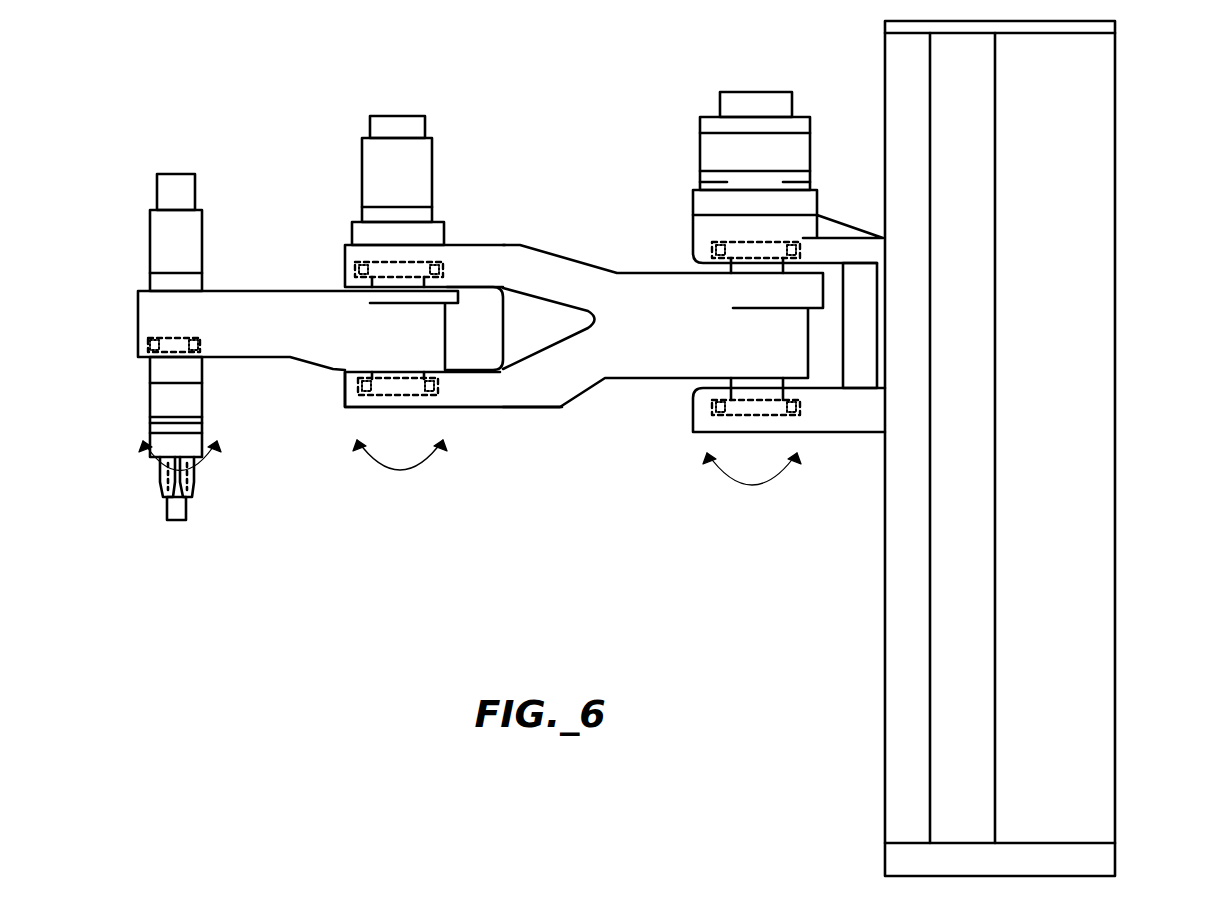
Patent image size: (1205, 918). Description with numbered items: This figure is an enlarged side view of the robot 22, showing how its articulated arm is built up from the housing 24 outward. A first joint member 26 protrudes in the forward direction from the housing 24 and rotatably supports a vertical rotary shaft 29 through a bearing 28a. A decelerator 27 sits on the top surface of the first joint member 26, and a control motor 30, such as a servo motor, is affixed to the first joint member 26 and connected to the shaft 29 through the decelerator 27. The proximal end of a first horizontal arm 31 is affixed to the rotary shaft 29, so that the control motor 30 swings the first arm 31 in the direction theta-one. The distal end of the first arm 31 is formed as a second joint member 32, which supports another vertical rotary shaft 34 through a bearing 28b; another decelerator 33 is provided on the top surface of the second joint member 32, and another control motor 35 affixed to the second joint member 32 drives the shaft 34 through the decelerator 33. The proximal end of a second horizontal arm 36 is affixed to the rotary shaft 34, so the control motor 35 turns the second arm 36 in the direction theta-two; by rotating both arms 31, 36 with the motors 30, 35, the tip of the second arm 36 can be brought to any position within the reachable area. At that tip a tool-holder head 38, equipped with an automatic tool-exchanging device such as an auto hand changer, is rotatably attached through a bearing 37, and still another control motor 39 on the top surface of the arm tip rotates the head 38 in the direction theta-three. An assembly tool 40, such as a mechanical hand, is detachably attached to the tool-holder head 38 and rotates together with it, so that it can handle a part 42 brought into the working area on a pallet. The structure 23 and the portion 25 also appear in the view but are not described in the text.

The robot 22 is at (531, 151).
The wall / mounting surface 23 is at (1105, 366).
The housing 24 is at (883, 407).
The forearm fork member 25 is at (518, 415).
The first joint member 26 is at (711, 431).
The decelerator 27 is at (706, 205).
The bearing 28a is at (713, 251).
The bearing 28b is at (360, 266).
The rotary shaft 29 is at (694, 392).
The control motor 30 is at (711, 150).
The first horizontal arm 31 is at (597, 271).
The second joint member 32 is at (358, 406).
The decelerator 33 is at (430, 247).
The rotary shaft 34 is at (358, 390).
The control motor 35 is at (423, 178).
The second horizontal arm 36 is at (218, 300).
The bearing 37 is at (152, 343).
The tool-holder head 38 is at (171, 368).
The control motor 39 is at (166, 256).
The assembly tool 40 is at (176, 468).
The part 42 is at (171, 500).